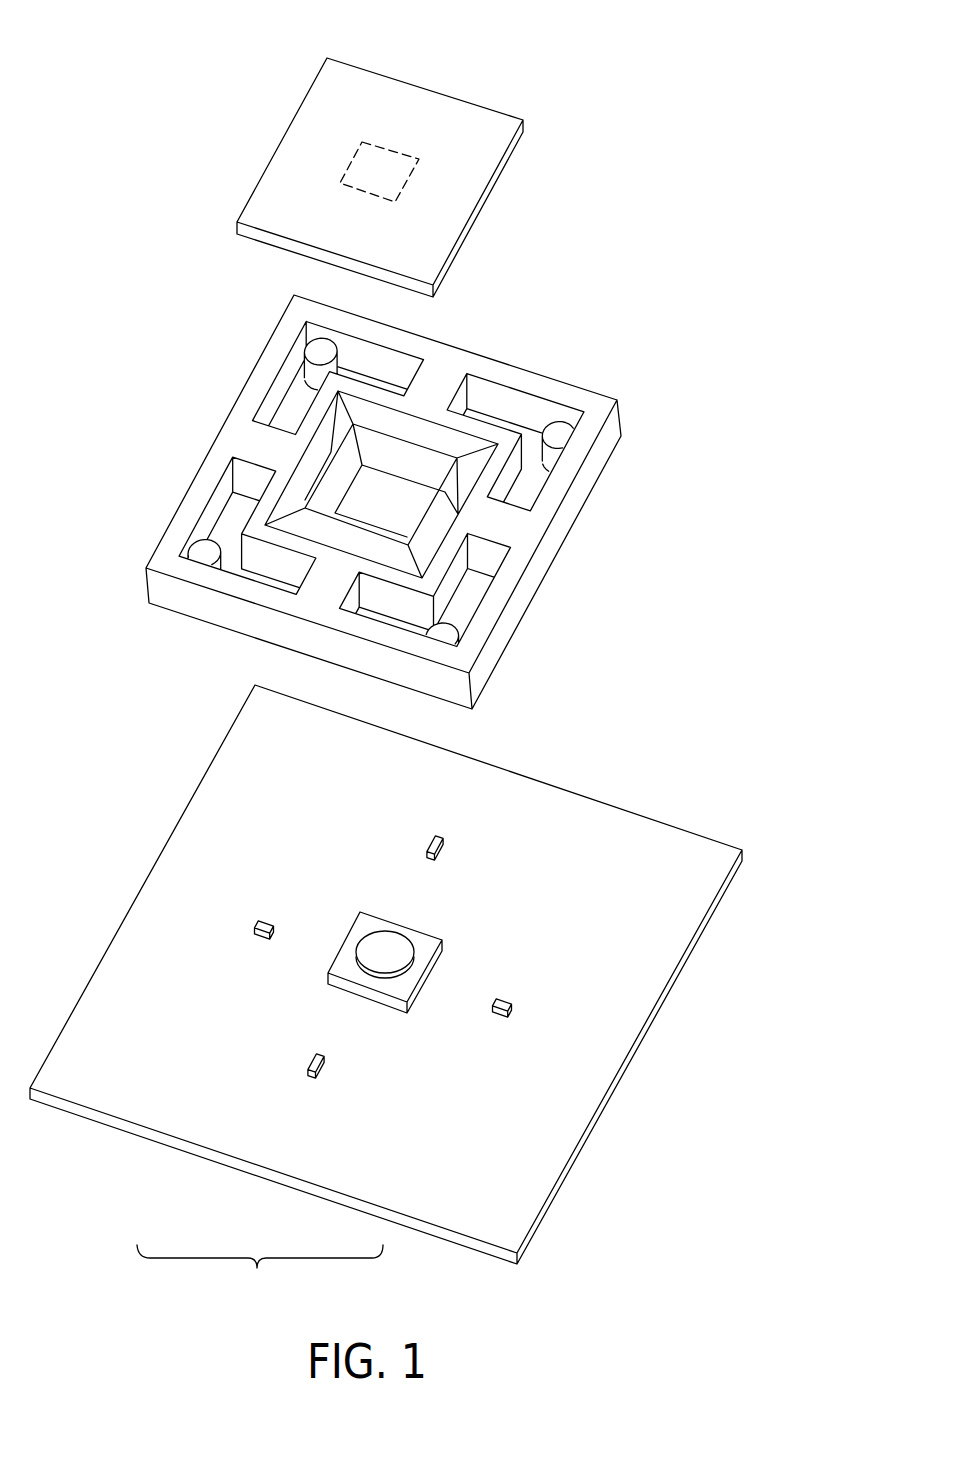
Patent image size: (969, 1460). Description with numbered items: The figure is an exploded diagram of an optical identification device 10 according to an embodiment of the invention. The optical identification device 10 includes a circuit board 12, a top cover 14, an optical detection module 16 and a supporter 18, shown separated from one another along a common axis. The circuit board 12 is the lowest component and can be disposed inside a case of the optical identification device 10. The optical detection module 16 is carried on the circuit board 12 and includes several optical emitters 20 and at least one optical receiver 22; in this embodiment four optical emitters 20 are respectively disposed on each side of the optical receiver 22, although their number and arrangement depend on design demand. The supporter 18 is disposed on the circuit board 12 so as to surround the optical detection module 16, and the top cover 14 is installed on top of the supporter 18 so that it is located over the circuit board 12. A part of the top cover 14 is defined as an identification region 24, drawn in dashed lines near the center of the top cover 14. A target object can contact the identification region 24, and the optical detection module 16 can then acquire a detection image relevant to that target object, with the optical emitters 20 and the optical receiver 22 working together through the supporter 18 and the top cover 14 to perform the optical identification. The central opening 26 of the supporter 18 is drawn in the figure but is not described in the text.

The optical identification device 10 is at (588, 97).
The circuit board 12 is at (233, 787).
The top cover 14 is at (298, 173).
The optical detection module 16 is at (260, 1280).
The supporter 18 is at (243, 440).
The optical emitter 20 is at (254, 936).
The optical receiver 22 is at (342, 967).
The identification region 24 is at (393, 165).
The central aperture 26 is at (432, 405).